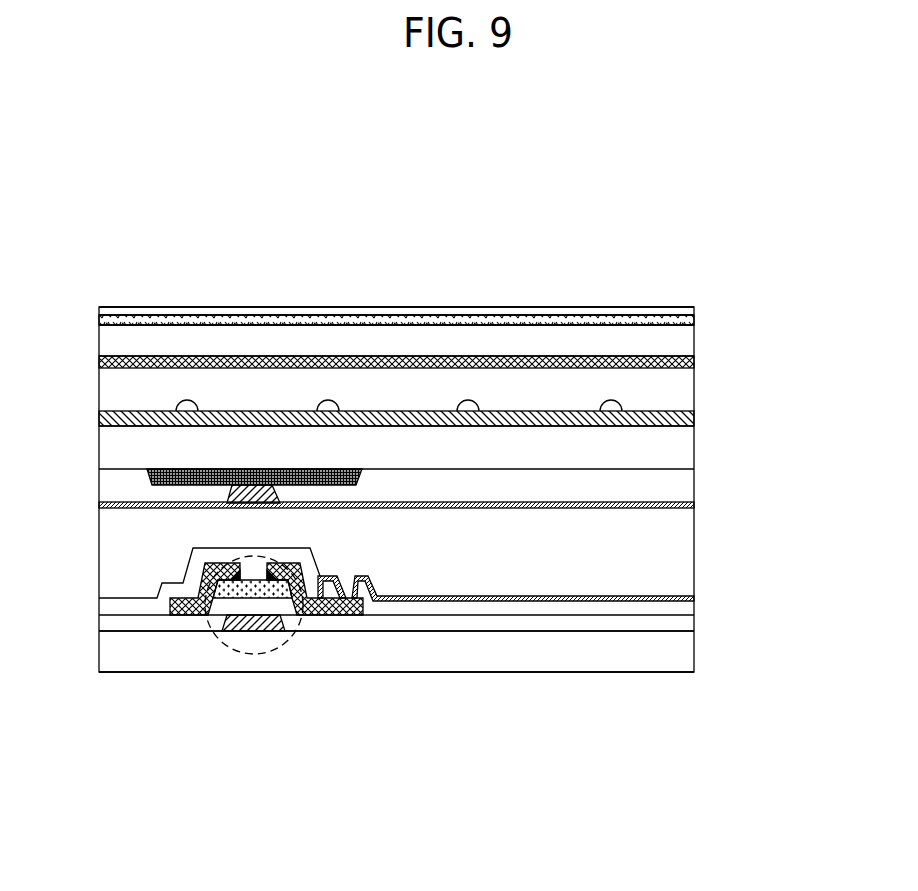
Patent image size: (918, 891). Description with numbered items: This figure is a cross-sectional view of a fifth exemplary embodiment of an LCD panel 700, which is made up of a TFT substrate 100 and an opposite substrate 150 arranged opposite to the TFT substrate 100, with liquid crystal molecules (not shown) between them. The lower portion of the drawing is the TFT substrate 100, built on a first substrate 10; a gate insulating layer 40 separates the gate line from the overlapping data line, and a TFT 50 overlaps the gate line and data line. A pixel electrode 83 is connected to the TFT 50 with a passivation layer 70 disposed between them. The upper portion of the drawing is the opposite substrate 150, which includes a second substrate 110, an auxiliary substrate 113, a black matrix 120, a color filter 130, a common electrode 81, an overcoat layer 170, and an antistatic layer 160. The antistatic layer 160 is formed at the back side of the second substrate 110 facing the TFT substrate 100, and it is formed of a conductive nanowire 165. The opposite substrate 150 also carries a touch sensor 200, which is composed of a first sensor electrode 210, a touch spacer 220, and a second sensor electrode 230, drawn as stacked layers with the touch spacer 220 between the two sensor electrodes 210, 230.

The LCD panel 700 is at (120, 233).
The TFT substrate 100 is at (808, 650).
The opposite substrate 150 is at (808, 422).
The first substrate 10 is at (422, 660).
The gate insulating layer 40 is at (365, 625).
The TFT 50 is at (252, 656).
The passivation layer 70 is at (634, 610).
The pixel electrode 83 is at (567, 600).
The common electrode 81 is at (694, 504).
The second substrate 110 is at (110, 338).
The auxiliary substrate 113 is at (125, 447).
The black matrix 120 is at (130, 469).
The color filter 130 is at (125, 488).
The antistatic layer 160 is at (478, 317).
The conductive nanowire 165 is at (627, 320).
The overcoat layer 170 is at (533, 312).
The touch sensor 200 is at (768, 352).
The first sensor electrode 210 is at (694, 418).
The touch spacer 220 is at (612, 406).
The second sensor electrode 230 is at (694, 362).